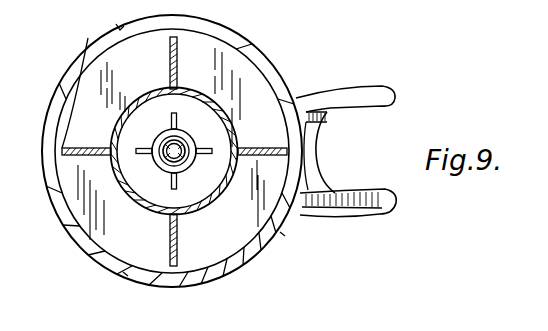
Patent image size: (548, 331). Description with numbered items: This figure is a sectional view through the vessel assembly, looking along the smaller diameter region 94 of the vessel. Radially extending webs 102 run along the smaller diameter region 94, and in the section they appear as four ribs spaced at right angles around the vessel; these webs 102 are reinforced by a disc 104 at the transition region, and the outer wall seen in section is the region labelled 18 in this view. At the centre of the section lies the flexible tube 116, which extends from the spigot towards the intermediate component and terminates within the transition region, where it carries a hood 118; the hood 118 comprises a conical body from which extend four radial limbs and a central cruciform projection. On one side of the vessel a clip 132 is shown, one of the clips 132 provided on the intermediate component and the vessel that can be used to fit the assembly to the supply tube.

The housing 18 is at (172, 151).
The smaller diameter region 94 is at (135, 205).
The radially extending webs 102 is at (172, 58).
The disc 104 is at (258, 263).
The flexible tube 116 is at (183, 160).
The hood 118 is at (190, 135).
The clips 132 is at (373, 85).